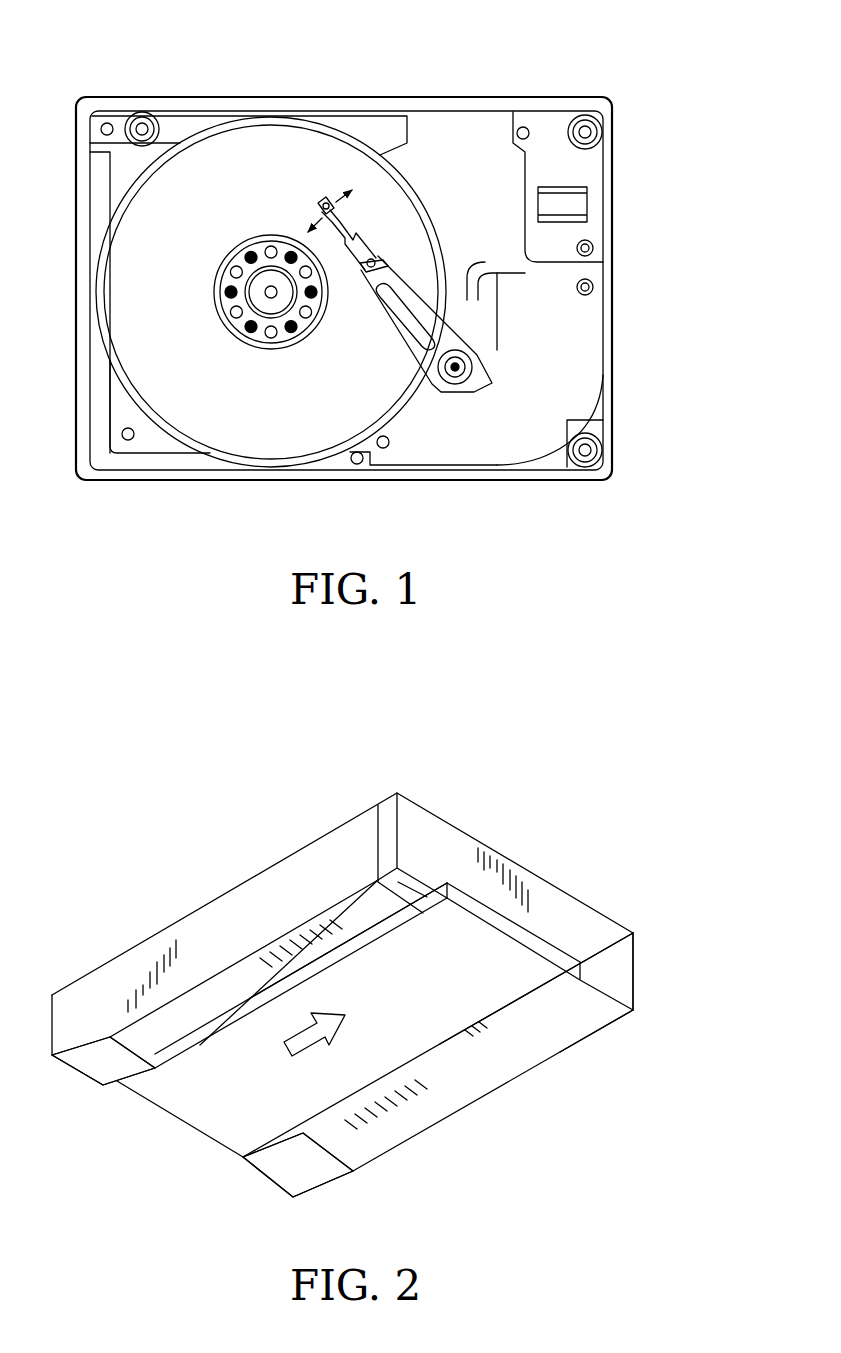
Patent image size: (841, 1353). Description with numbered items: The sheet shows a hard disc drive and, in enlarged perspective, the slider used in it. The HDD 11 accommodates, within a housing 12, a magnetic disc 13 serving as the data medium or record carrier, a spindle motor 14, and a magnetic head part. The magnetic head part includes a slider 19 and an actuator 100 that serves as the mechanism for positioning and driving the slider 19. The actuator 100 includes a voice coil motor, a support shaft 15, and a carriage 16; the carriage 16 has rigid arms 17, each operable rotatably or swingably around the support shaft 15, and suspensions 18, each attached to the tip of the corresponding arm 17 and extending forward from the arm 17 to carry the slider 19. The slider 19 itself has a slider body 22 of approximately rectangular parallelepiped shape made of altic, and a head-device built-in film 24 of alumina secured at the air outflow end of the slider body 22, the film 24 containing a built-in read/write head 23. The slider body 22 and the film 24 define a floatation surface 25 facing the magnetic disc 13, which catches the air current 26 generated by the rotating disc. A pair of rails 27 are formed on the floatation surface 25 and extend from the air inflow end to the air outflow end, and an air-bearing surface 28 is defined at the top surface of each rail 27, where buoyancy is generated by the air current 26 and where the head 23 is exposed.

In FIG. 1, the HDD 11 is at (340, 78).
In FIG. 1, the housing 12 is at (263, 478).
In FIG. 1, the magnetic disc 13 is at (423, 212).
In FIG. 1, the spindle motor 14 is at (250, 299).
In FIG. 1, the support shaft 15 is at (458, 370).
In FIG. 1, the carriage 16 is at (366, 288).
In FIG. 1, the rigid arm 17 is at (388, 322).
In FIG. 1, the suspension 18 is at (350, 222).
In FIG. 1, the slider 19 is at (318, 206).
In FIG. 2, the slider 19 is at (218, 884).
In FIG. 1, the actuator 100 is at (538, 456).
In FIG. 2, the slider body 22 is at (608, 1024).
In FIG. 2, the read/write head 23 is at (412, 882).
In FIG. 2, the head-device built-in film 24 is at (636, 937).
In FIG. 2, the floatation surface 25 is at (297, 962).
In FIG. 2, the air current 26 is at (292, 1052).
In FIG. 2, the rail 27 is at (199, 1045).
In FIG. 2, the air-bearing surface 28 is at (386, 922).